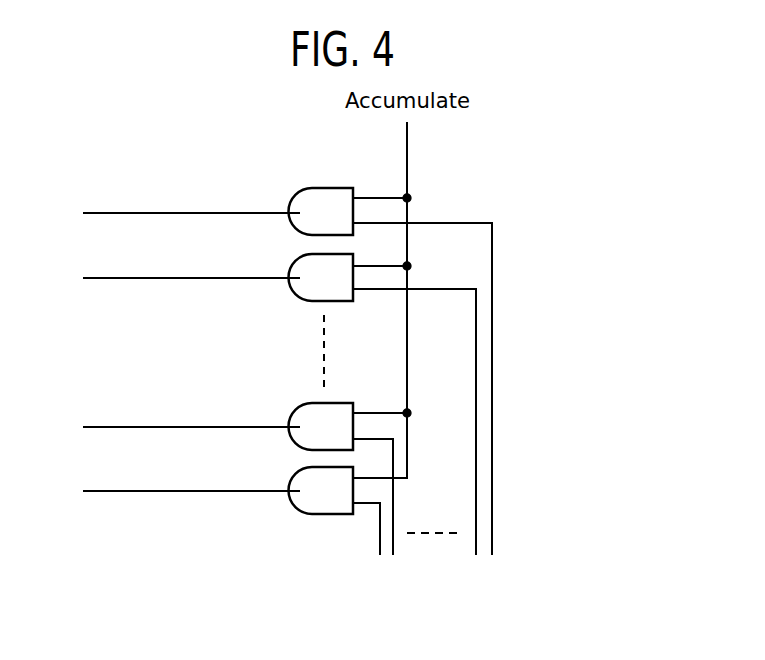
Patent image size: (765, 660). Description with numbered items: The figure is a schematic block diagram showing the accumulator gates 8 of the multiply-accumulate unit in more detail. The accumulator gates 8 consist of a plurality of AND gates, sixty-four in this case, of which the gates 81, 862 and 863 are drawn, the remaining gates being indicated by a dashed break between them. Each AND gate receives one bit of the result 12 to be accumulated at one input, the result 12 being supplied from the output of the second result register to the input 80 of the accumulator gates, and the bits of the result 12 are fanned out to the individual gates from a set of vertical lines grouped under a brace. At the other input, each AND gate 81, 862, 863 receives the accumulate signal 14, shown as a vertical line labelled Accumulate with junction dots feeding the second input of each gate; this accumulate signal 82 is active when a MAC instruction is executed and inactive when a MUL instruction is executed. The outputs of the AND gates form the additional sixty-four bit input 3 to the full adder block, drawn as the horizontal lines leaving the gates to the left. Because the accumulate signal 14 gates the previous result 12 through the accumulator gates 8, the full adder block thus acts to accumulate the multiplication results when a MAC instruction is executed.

The additional 64 bit input 3 is at (108, 196).
The accumulator gates 8 is at (540, 226).
The output of result register Reg R2 12 is at (495, 557).
The accumulate signal 14 is at (408, 165).
The input of the accumulator gates 80 is at (555, 478).
The accumulate signal 82 is at (358, 190).
The AND gate 8_63 863 is at (302, 214).
The AND gate 8_62 862 is at (302, 280).
The AND gate 8_1 81 is at (302, 428).